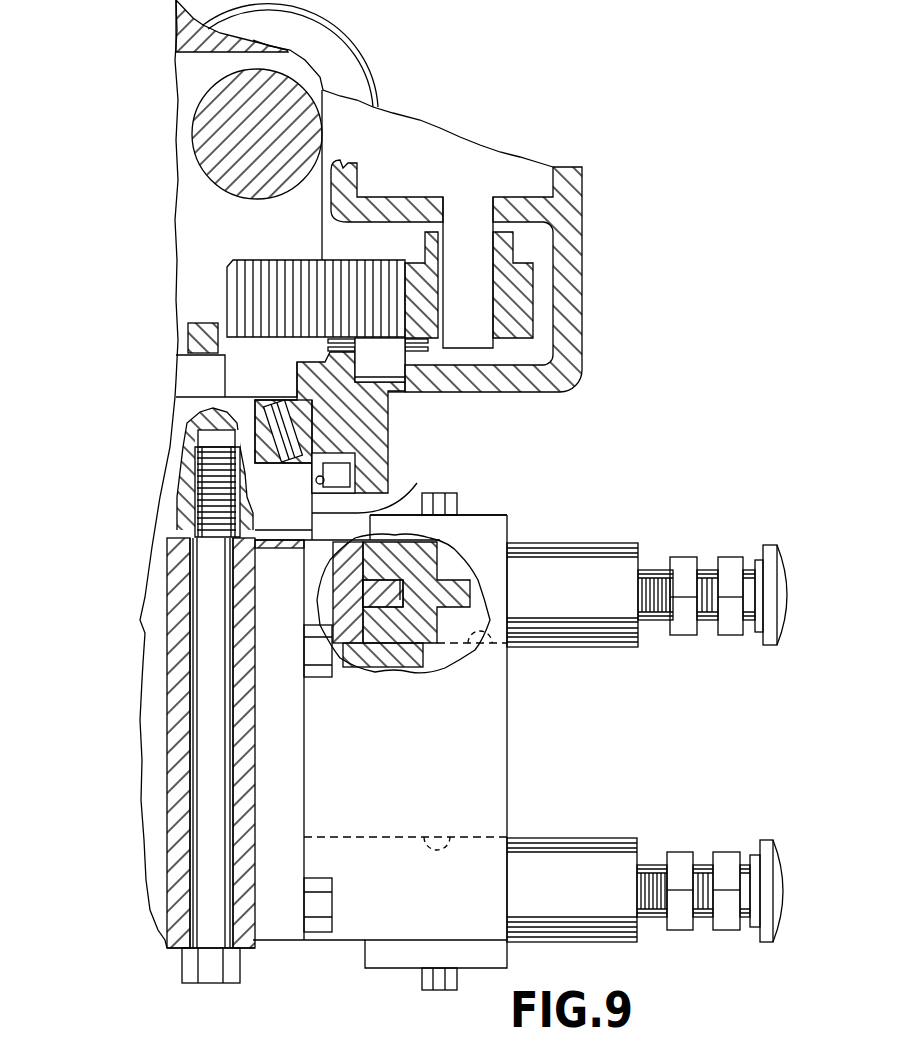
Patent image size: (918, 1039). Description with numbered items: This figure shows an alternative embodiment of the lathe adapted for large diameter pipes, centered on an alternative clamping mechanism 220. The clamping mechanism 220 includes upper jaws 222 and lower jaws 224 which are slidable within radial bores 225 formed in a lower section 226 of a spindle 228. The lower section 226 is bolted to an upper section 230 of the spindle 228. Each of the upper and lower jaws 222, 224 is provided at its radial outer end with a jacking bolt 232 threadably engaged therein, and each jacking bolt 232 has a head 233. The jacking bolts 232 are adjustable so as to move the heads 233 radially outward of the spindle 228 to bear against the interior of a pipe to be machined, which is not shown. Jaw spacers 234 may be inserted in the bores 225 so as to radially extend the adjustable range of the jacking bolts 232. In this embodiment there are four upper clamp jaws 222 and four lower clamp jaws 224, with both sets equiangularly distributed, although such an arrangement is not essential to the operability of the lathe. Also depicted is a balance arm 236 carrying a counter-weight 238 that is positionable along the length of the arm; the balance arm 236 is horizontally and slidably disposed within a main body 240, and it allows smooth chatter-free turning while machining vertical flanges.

The clamping mechanism 220 is at (588, 525).
The upper jaws 222 is at (555, 650).
The lower jaws 224 is at (593, 943).
The radial bores 225 is at (472, 652).
The lower section 226 is at (508, 708).
The spindle 228 is at (137, 611).
The upper section 230 is at (377, 487).
The jacking bolt 232 is at (750, 570).
The head 233 is at (783, 635).
The jaw spacers 234 is at (423, 668).
The balance arm 236 is at (197, 168).
The counter-weight 238 is at (375, 80).
The main body 240 is at (582, 316).